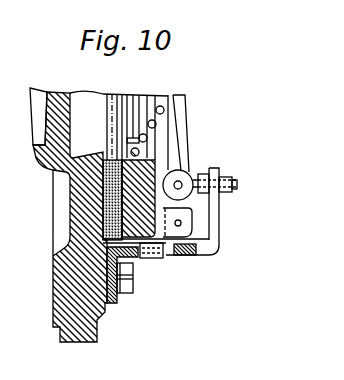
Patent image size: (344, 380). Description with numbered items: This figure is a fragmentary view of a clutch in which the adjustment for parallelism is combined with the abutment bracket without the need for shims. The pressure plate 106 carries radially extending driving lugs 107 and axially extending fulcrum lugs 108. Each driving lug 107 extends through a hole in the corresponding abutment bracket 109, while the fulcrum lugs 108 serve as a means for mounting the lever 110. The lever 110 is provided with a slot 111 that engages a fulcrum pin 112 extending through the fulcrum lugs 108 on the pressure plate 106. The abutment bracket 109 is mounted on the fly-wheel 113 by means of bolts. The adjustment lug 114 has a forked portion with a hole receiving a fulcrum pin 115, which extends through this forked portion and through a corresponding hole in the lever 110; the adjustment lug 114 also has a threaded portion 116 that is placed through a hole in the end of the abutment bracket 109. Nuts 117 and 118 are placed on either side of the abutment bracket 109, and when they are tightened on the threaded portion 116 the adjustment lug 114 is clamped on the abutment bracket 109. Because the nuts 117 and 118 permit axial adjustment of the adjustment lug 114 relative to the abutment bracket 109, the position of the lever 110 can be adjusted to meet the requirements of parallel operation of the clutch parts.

The pressure plate 106 is at (110, 224).
The driving lug 107 is at (160, 258).
The fulcrum lug 108 is at (186, 212).
The abutment bracket 109 is at (191, 257).
The lever 110 is at (185, 111).
The slot 111 is at (213, 251).
The fulcrum pin 112 is at (196, 236).
The fly-wheel 113 is at (72, 268).
The adjustment lug 114 is at (107, 288).
The fulcrum pin 115 is at (193, 186).
The threaded portion 116 is at (226, 180).
The nut 117 is at (237, 185).
The nut 118 is at (233, 199).